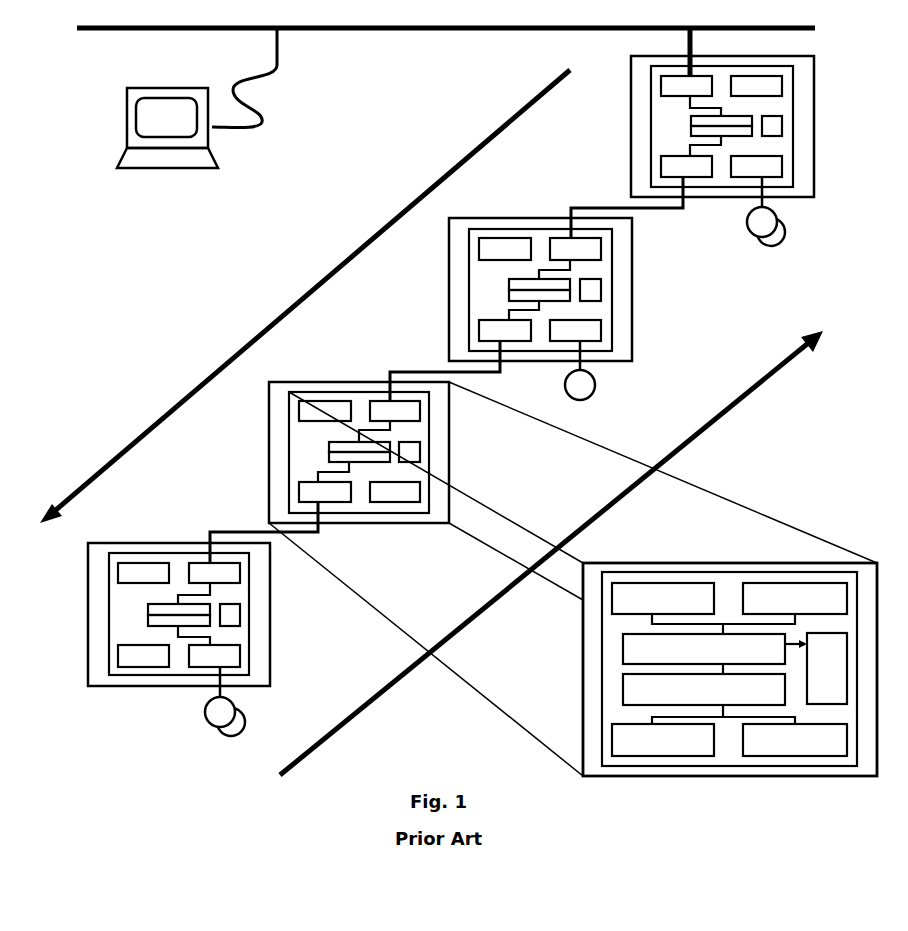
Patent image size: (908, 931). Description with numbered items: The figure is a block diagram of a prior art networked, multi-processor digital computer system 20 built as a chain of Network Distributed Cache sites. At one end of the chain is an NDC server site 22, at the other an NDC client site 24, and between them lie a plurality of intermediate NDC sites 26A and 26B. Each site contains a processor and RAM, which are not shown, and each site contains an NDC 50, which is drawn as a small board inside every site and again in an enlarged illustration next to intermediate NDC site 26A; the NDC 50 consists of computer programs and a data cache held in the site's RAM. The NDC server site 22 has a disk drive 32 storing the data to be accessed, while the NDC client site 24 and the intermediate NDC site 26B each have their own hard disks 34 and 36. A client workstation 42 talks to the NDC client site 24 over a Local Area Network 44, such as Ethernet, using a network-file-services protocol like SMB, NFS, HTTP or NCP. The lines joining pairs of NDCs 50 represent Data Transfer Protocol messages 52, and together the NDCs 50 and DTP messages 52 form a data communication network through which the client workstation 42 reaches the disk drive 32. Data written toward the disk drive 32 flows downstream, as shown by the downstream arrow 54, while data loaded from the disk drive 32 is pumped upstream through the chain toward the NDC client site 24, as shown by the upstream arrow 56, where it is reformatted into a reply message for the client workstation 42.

The digital computer system 20 is at (195, 312).
The NDC server site 22 is at (88, 622).
The NDC client site 24 is at (631, 135).
The intermediate NDC site 26A is at (269, 462).
The intermediate NDC site 26B is at (449, 301).
The disk drive 32 is at (245, 725).
The hard disk 34 is at (785, 236).
The hard disk 36 is at (595, 390).
The client workstation 42 is at (127, 128).
The Local Area Network 44 is at (135, 30).
The NDC 50 is at (794, 116).
The DTP messages 52 is at (571, 208).
The downstream arrow 54 is at (107, 460).
The upstream arrow 56 is at (792, 370).